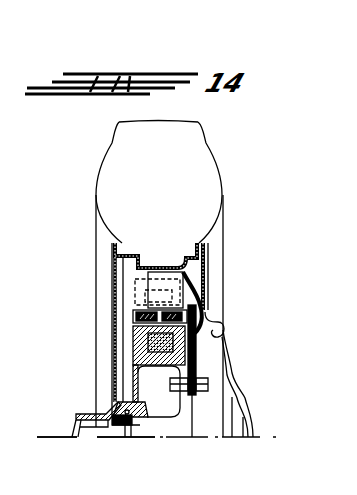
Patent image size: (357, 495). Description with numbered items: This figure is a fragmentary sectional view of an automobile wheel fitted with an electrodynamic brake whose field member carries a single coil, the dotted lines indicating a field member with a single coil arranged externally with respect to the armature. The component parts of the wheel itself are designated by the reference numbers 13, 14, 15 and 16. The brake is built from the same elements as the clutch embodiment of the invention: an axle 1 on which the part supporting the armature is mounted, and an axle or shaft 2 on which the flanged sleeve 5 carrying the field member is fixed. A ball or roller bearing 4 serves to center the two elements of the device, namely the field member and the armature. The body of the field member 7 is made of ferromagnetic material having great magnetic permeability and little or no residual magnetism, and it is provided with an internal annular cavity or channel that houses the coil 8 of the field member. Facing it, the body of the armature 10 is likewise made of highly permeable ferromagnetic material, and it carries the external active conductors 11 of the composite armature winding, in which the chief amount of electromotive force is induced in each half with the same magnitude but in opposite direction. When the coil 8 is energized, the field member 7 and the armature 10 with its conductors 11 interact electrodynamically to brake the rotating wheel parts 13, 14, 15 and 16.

The axle 1 is at (92, 430).
The axle or shaft 2 is at (82, 415).
The ball or roller bearing 4 is at (125, 430).
The flanged sleeve 5 is at (135, 373).
The body of the field member 7 is at (135, 339).
The coil 8 is at (197, 353).
The body of the armature 10 is at (203, 309).
The external active conductors 11 is at (135, 318).
The wheel component part 13 is at (197, 260).
The wheel component part 14 is at (200, 189).
The wheel component part 15 is at (241, 392).
The wheel component part 16 is at (213, 323).